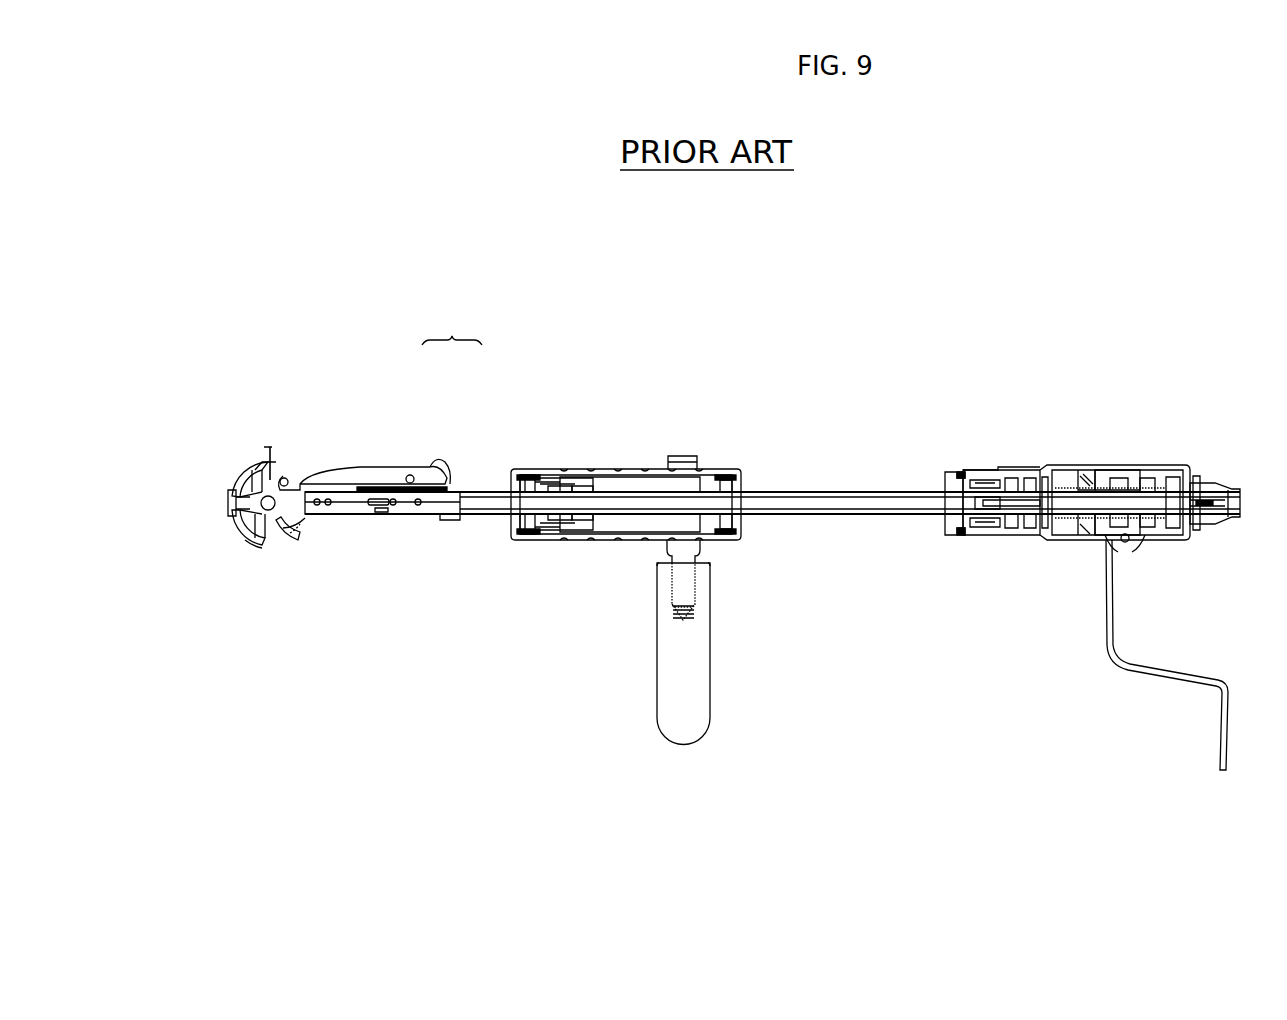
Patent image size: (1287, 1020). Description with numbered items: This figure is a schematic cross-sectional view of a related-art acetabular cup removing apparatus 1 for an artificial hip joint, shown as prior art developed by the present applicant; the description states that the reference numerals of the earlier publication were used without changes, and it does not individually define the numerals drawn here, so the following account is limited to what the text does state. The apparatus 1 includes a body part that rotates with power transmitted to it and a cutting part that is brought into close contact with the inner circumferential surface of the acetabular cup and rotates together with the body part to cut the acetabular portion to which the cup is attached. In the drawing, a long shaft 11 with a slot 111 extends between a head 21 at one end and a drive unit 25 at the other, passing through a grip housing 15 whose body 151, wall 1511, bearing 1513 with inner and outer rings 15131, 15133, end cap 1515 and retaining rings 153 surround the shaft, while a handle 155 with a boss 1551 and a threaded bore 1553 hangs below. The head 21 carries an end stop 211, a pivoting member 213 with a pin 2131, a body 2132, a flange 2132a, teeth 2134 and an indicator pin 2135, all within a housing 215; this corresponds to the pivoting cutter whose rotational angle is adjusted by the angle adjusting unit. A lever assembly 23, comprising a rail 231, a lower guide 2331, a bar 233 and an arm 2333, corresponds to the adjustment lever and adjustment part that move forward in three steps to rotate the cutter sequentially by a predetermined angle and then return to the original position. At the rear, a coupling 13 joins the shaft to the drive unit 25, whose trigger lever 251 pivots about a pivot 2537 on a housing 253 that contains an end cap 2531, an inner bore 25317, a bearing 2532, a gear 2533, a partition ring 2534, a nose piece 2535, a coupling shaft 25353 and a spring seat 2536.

The surgical instrument 1 is at (893, 310).
The shaft tube 11 is at (842, 491).
The slot 111 is at (382, 512).
The rear coupling 13 is at (990, 473).
The grip housing 15 is at (722, 441).
The housing body 151 is at (645, 462).
The housing wall 1511 is at (625, 470).
The bearing block 1513 is at (560, 470).
The bearing inner ring 15131 is at (568, 540).
The bearing outer ring 15133 is at (578, 540).
The end cap 1515 is at (521, 541).
The retaining rings 153 is at (525, 468).
The handle 155 is at (720, 635).
The fastening boss 1551 is at (686, 455).
The threaded bore 1553 is at (695, 694).
The head portion 21 is at (224, 400).
The end stop 211 is at (227, 503).
The rotary wheel 213 is at (291, 545).
The pivot pin 2131 is at (258, 485).
The wheel body 2132 is at (276, 546).
The wheel flange 2132a is at (255, 468).
The wheel teeth 2134 is at (300, 542).
The indicator pin 2135 is at (274, 454).
The head housing 215 is at (243, 545).
The lever assembly 23 is at (452, 330).
The rail 231 is at (482, 498).
The rail lower guide 2331 is at (448, 522).
The lever bar 233 is at (385, 466).
The lever arm 2333 is at (352, 466).
The drive unit 25 is at (1039, 708).
The trigger lever 251 is at (1223, 731).
The drive housing 253 is at (1088, 558).
The housing end cap 2531 is at (1140, 468).
The inner bore 25317 is at (1107, 470).
The bearing 2532 is at (1086, 470).
The gear 2533 is at (1094, 470).
The partition ring 2534 is at (1042, 537).
The nose piece 2535 is at (1040, 541).
The coupling shaft 25353 is at (1010, 537).
The spring seat 2536 is at (1028, 475).
The trigger pivot 2537 is at (1150, 548).